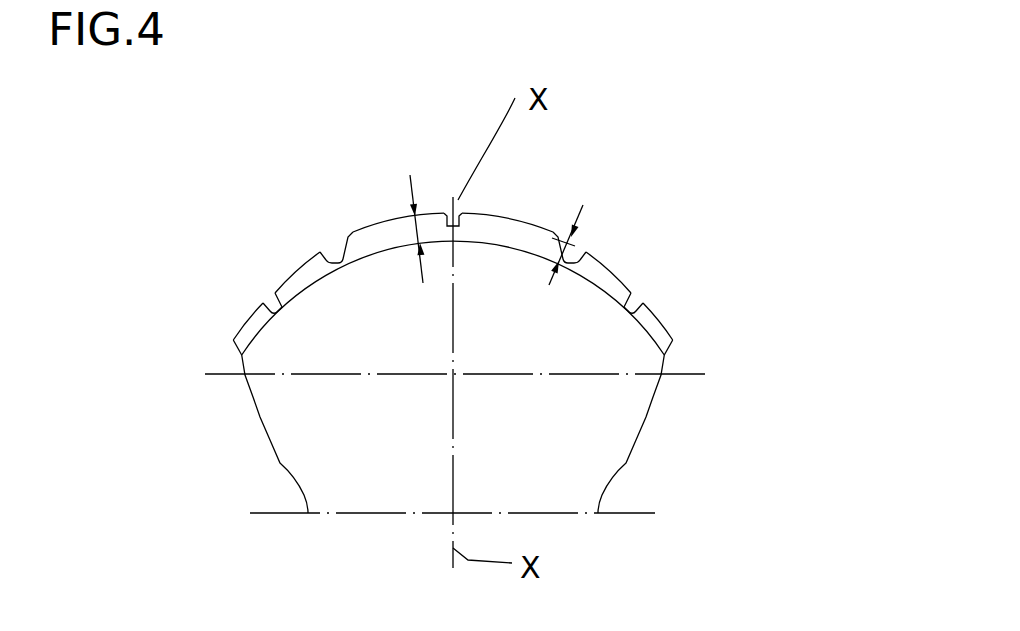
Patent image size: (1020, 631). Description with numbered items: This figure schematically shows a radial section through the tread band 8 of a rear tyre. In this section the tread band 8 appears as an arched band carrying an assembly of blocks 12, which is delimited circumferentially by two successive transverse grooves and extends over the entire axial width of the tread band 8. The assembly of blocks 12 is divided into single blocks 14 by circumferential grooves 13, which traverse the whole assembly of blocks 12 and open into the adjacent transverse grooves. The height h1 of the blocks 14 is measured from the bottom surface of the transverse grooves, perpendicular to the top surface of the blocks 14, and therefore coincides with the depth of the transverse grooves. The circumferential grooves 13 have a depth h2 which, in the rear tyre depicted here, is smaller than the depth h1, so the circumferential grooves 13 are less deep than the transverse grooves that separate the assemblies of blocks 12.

The tread band 8 is at (667, 320).
The assembly of blocks 12 is at (603, 258).
The circumferential grooves 13 is at (450, 212).
The single blocks 14 is at (497, 213).
The height of the blocks h1 is at (418, 240).
The depth of the circumferential grooves h2 is at (557, 240).